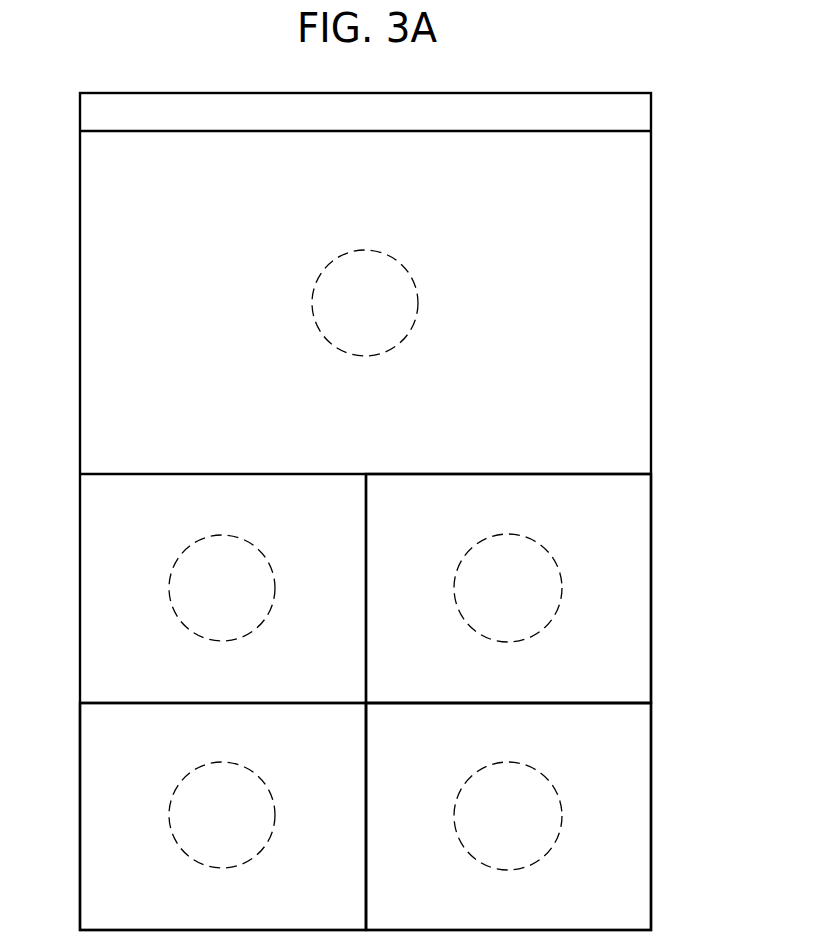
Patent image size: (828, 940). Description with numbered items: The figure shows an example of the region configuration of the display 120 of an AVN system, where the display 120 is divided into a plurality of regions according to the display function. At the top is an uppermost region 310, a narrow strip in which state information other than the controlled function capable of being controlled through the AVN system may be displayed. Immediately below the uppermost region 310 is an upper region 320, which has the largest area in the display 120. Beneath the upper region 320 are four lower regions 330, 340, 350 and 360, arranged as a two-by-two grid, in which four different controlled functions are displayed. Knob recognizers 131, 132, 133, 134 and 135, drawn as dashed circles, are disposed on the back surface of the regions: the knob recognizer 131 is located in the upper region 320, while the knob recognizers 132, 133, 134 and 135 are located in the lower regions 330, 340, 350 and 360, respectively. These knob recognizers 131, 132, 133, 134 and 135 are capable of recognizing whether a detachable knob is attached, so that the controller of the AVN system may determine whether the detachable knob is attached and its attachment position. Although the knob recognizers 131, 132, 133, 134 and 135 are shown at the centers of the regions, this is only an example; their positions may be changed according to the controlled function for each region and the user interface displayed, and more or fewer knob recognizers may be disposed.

The display 120 is at (652, 207).
The uppermost region 310 is at (91, 112).
The upper region 320 is at (91, 248).
The lower region 330 is at (91, 551).
The lower region 340 is at (641, 551).
The lower region 350 is at (91, 778).
The lower region 360 is at (641, 778).
The knob recognizer 131 is at (320, 333).
The knob recognizer 132 is at (178, 618).
The knob recognizer 133 is at (547, 624).
The knob recognizer 134 is at (180, 848).
The knob recognizer 135 is at (547, 851).